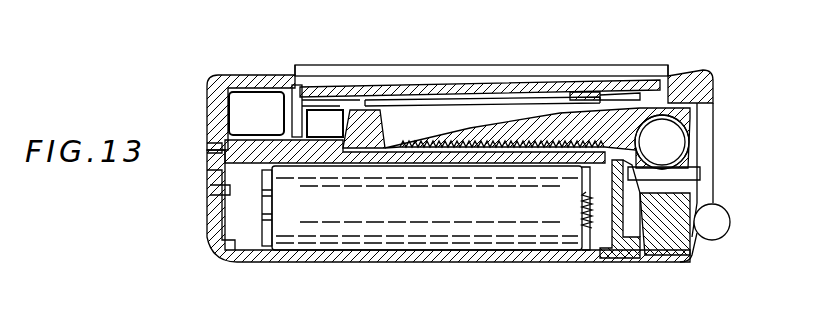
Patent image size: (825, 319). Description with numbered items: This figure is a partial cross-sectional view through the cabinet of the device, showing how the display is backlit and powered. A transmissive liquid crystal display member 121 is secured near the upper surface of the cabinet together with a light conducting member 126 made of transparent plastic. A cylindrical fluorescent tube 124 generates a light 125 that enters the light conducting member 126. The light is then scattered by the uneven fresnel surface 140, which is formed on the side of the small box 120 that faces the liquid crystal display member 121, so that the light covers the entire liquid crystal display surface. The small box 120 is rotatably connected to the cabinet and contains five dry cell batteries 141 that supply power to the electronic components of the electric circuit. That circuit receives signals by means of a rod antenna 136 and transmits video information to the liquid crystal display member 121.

The small box 120 is at (460, 163).
The transmissive liquid crystal display member 121 is at (546, 82).
The cylindrical fluorescent tube 124 is at (678, 140).
The light 125 is at (495, 50).
The light conducting member 126 is at (478, 130).
The rod antenna 136 is at (722, 218).
The uneven surface (fresnel surface) 140 is at (464, 146).
The dry cell batteries 141 is at (420, 237).